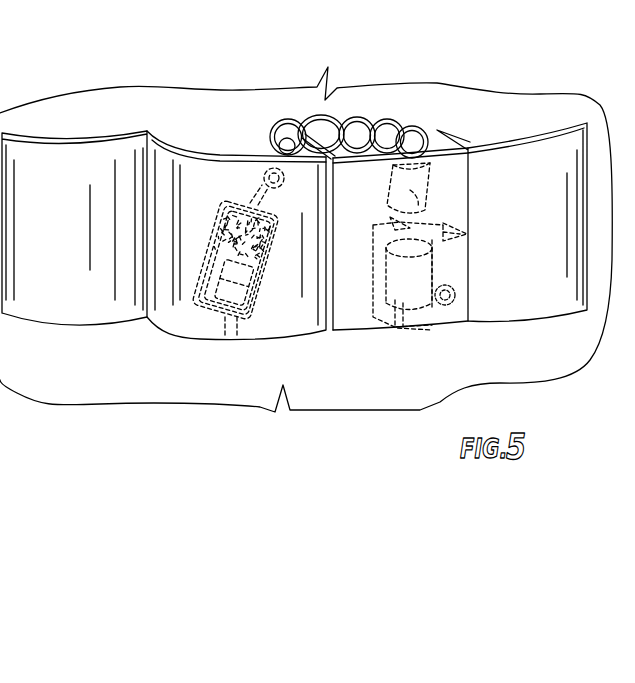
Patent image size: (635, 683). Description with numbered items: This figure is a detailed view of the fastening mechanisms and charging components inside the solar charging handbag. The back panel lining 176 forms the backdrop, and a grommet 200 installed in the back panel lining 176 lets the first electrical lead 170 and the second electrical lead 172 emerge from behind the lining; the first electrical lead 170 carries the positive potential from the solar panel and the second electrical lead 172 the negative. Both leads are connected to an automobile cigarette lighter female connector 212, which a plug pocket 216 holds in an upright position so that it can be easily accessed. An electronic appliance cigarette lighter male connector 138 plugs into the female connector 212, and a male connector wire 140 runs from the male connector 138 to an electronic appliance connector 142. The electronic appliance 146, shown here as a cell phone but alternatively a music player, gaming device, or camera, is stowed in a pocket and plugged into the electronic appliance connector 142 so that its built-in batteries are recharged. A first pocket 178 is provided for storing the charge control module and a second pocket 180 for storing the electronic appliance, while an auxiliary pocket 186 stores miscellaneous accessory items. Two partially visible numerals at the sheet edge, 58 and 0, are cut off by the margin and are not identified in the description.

The electronic appliance cigarette lighter male connector 138 is at (412, 160).
The male connector wire 140 is at (382, 118).
The electronic appliance connector 142 is at (250, 202).
The electronic appliance 146 is at (235, 335).
The first electrical lead 170 is at (402, 330).
The second electrical lead 172 is at (417, 323).
The back panel lining 176 is at (208, 142).
The first pocket 178 is at (153, 328).
The second pocket 180 is at (466, 311).
The auxiliary pocket 186 is at (0, 12).
The grommet 200 is at (447, 302).
The automobile cigarette lighter female connector 212 is at (434, 282).
The plug pocket 216 is at (455, 223).
The strap portion 58 is at (8, 39).
The strap portion 0 is at (3, 84).